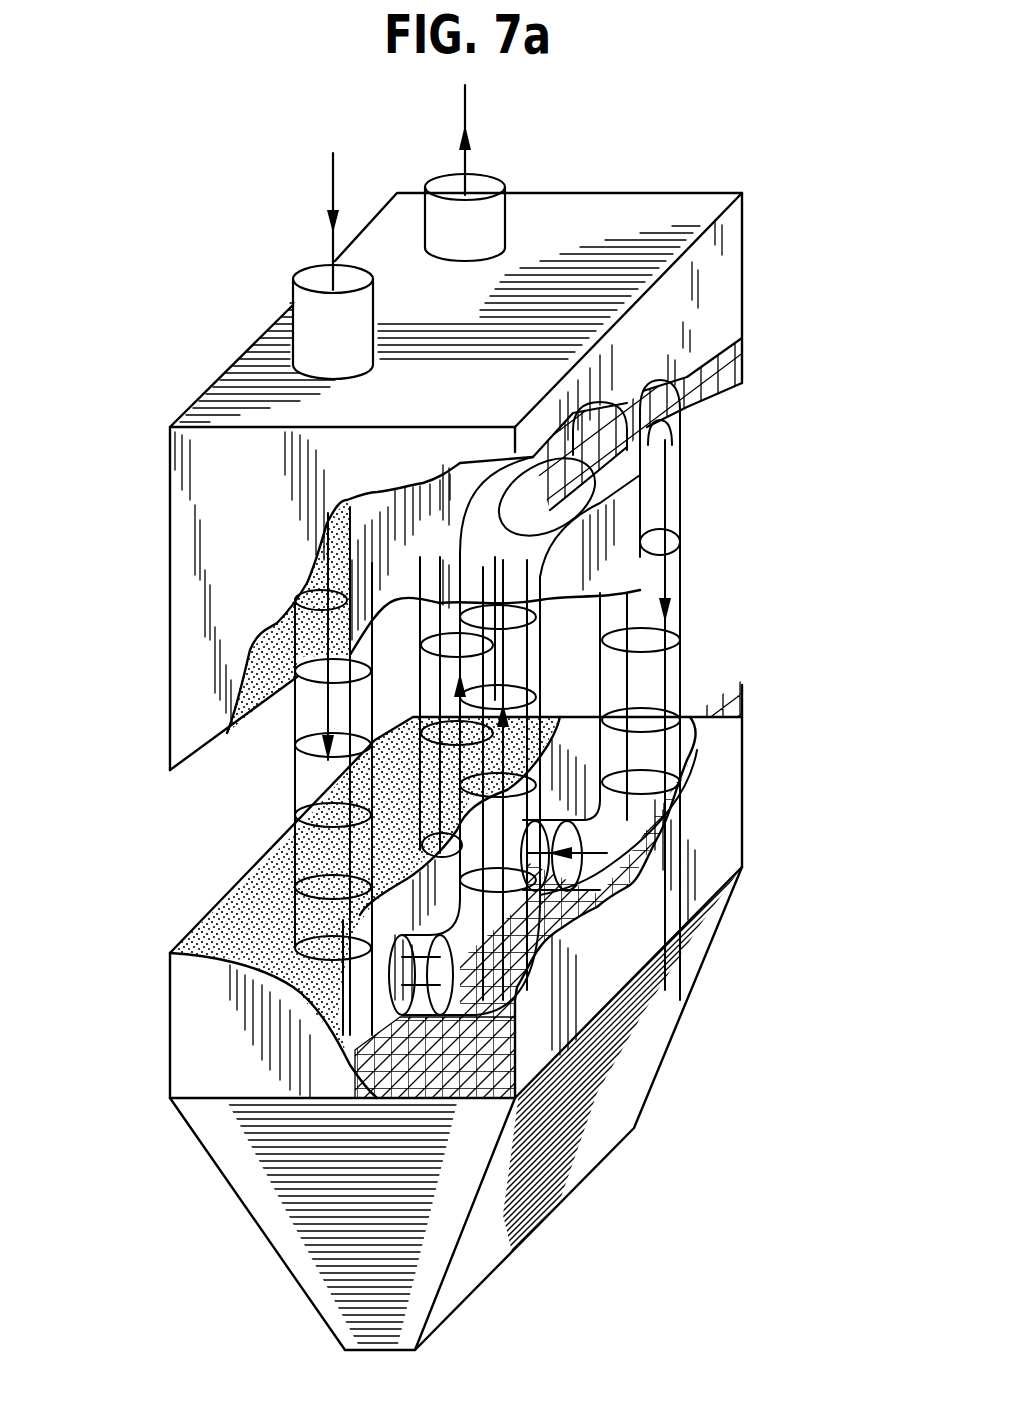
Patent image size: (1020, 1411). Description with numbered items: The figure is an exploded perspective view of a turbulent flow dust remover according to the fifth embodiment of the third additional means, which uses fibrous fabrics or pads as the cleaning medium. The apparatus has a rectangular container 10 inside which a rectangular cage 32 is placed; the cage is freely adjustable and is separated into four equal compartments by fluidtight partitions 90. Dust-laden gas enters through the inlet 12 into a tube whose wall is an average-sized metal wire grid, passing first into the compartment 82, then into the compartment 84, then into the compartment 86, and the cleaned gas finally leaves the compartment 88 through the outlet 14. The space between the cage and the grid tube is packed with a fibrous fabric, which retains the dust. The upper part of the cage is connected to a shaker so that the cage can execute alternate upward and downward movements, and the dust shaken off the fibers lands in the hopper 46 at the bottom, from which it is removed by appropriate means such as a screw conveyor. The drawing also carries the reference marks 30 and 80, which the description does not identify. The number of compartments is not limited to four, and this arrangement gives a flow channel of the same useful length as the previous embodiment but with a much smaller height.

The rectangular container 10 is at (743, 280).
The inlet 12 is at (325, 270).
The outlet 14 is at (452, 183).
The partition / tube sheet 30 is at (240, 937).
The rectangular cage 32 is at (743, 360).
The hopper 46 is at (603, 1113).
The lower chamber block 80 is at (760, 813).
The compartment 82 is at (305, 788).
The compartment 84 is at (570, 830).
The compartment 86 is at (612, 767).
The compartment 88 is at (420, 677).
The fluidtight partitions 90 is at (613, 513).